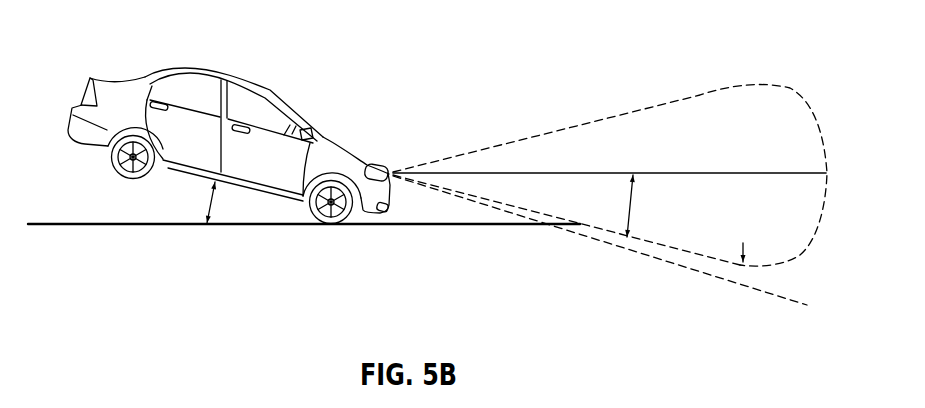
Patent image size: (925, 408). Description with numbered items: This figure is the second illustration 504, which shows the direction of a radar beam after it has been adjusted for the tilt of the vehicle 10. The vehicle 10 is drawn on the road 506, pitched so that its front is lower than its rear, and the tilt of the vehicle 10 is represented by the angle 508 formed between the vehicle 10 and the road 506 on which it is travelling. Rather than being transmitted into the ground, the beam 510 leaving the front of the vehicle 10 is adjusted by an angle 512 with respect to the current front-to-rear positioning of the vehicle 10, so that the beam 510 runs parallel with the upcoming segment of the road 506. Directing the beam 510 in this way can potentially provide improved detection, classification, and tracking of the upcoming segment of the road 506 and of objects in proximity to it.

The second illustration 504 is at (108, 44).
The vehicle 10 is at (172, 68).
The road 506 is at (78, 224).
The angle 508 is at (207, 207).
The beam 510 is at (654, 105).
The angle 512 is at (632, 217).